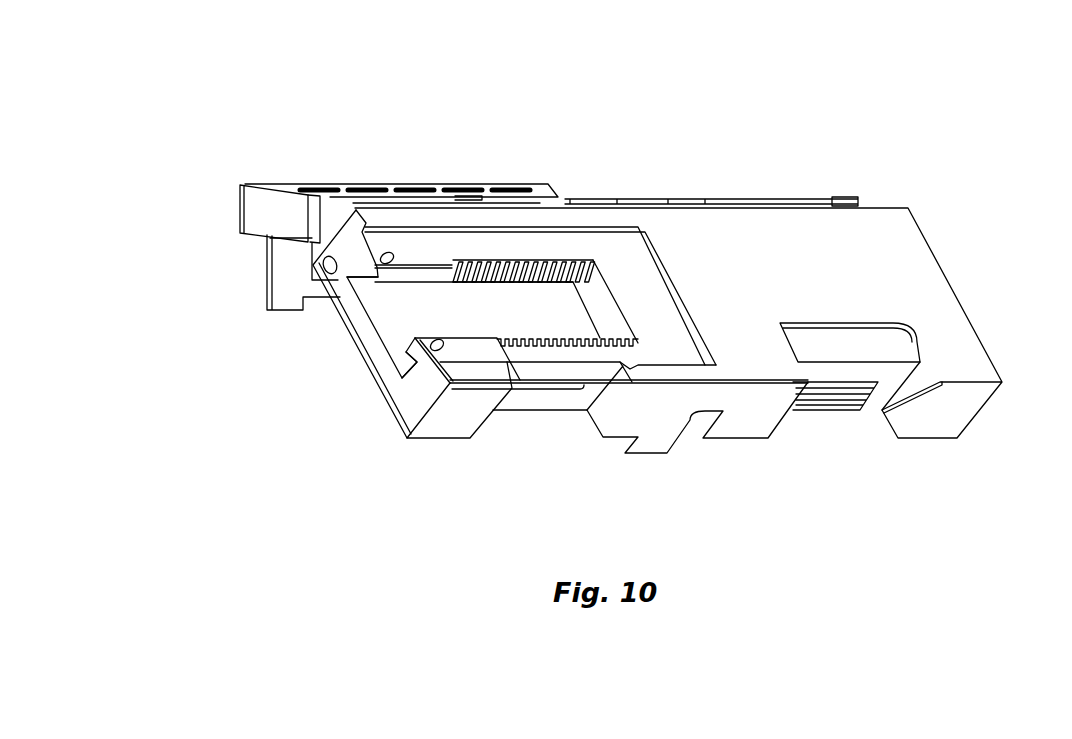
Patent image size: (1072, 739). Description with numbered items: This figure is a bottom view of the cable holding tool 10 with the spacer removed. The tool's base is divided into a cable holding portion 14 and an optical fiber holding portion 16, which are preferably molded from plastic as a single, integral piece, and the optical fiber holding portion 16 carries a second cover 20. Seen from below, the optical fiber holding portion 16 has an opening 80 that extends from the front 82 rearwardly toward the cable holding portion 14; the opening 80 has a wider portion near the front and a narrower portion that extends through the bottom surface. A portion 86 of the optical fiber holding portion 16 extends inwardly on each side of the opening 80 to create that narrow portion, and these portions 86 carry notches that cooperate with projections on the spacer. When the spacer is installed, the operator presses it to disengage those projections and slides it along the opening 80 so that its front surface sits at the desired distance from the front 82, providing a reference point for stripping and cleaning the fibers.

The cable holding tool 10 is at (602, 273).
The cable holding portion 14 is at (955, 294).
The optical fiber holding portion 16 is at (448, 428).
The second cover 20 is at (240, 212).
The opening 80 is at (400, 328).
The front 82 is at (345, 357).
The portion 86 is at (407, 273).